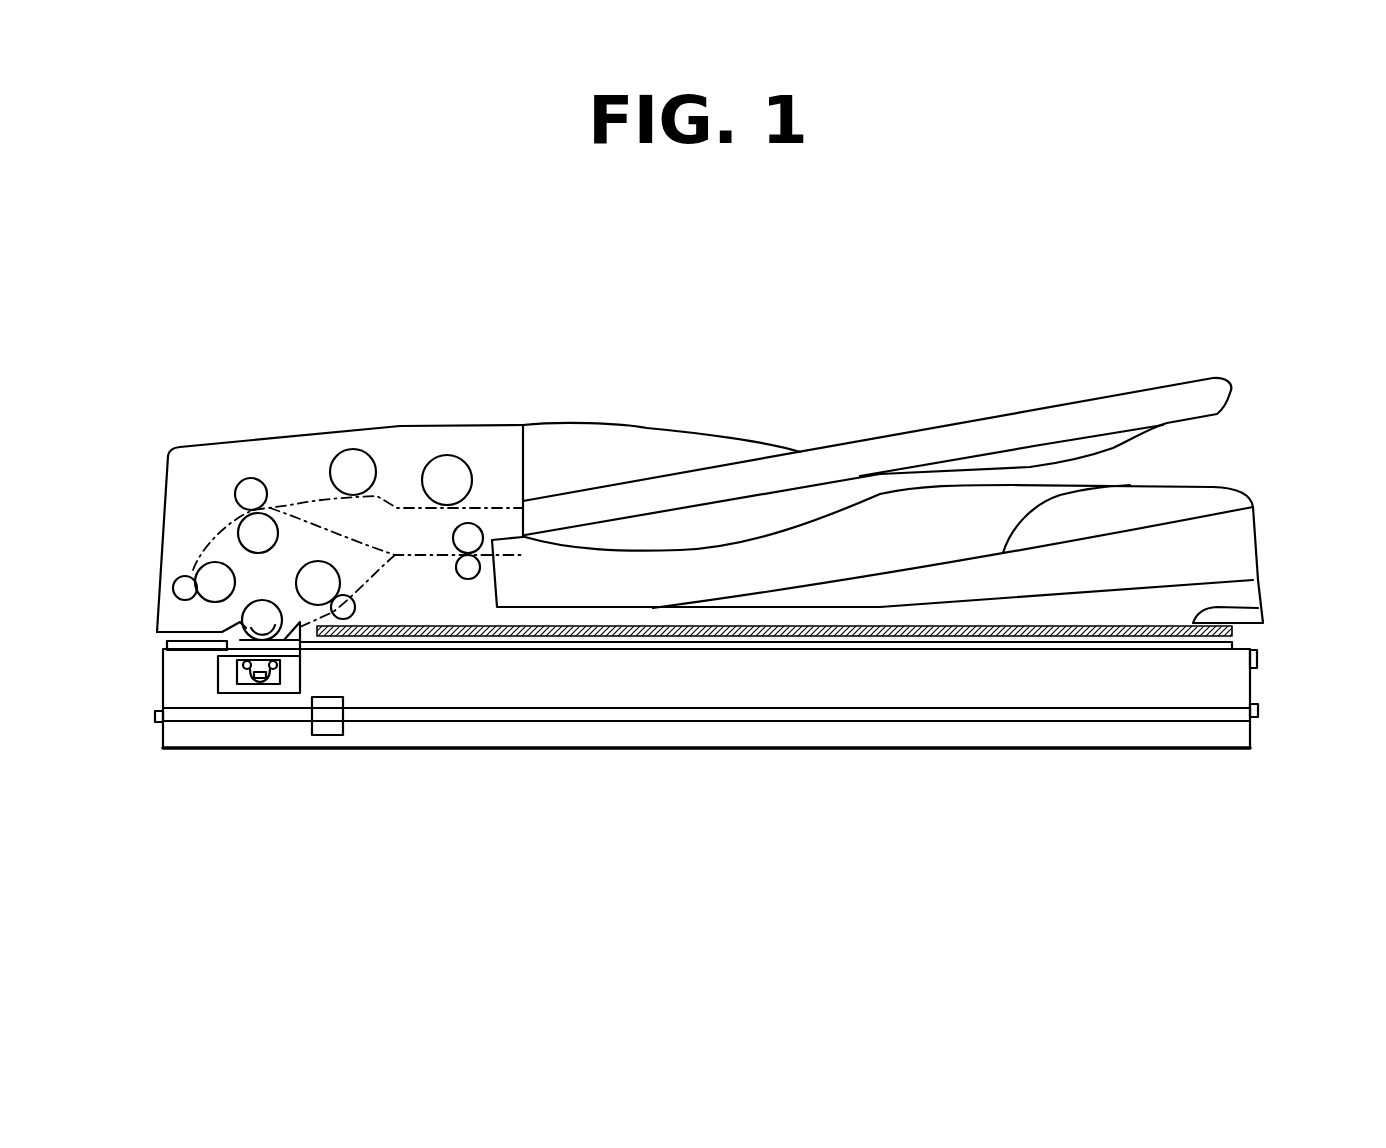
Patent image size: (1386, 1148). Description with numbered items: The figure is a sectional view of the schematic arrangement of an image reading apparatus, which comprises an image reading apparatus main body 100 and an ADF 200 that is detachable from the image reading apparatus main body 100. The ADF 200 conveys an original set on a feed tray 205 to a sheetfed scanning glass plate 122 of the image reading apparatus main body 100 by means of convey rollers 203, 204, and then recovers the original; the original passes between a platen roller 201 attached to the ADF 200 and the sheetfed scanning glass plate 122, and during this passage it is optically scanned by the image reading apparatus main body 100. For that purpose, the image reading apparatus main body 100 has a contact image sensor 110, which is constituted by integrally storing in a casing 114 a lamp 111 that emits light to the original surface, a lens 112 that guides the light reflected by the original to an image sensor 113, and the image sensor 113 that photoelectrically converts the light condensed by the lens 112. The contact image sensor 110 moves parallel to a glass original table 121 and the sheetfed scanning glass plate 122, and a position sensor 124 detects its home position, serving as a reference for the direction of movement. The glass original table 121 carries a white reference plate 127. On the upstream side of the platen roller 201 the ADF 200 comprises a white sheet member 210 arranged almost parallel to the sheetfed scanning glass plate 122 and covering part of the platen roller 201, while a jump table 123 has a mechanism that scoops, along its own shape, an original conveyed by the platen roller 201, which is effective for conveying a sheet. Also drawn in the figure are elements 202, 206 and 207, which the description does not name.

The image reading apparatus main body 100 is at (187, 752).
The contact image sensor 110 is at (266, 690).
The lamp 111 is at (240, 672).
The lens 112 is at (275, 688).
The image sensor 113 is at (242, 693).
The casing 114 is at (298, 653).
The glass original table 121 is at (697, 652).
The sheetfed scanning glass plate 122 is at (217, 657).
The jump table 123 is at (297, 655).
The position sensor 124 is at (335, 736).
The white reference plate 127 is at (300, 653).
The ADF 200 is at (297, 432).
The platen roller 201 is at (225, 630).
The pickup roller 202 is at (458, 457).
The convey roller 203 is at (212, 562).
The convey roller 204 is at (335, 567).
The feed tray 205 is at (833, 445).
The discharge tray 206 is at (1160, 481).
The platen glass 207 is at (1258, 609).
The white sheet member 210 is at (222, 620).